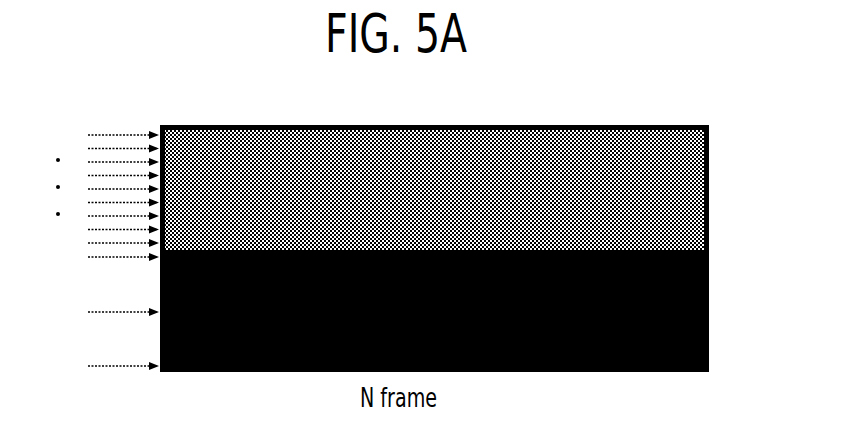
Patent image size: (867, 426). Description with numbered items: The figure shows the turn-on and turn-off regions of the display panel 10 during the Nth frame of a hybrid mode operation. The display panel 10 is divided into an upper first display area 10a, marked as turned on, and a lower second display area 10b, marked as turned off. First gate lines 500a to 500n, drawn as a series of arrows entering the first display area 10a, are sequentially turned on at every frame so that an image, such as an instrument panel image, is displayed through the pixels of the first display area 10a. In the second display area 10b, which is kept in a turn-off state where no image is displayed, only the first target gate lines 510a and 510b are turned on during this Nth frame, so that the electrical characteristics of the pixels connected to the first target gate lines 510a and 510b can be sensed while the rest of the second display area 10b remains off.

The display panel 10 is at (795, 186).
The first display area 10a is at (708, 187).
The second display area 10b is at (708, 319).
The first gate line 500a is at (98, 135).
The first gate line 500n is at (98, 256).
The first target gate line 510a is at (98, 312).
The first target gate line 510b is at (98, 366).